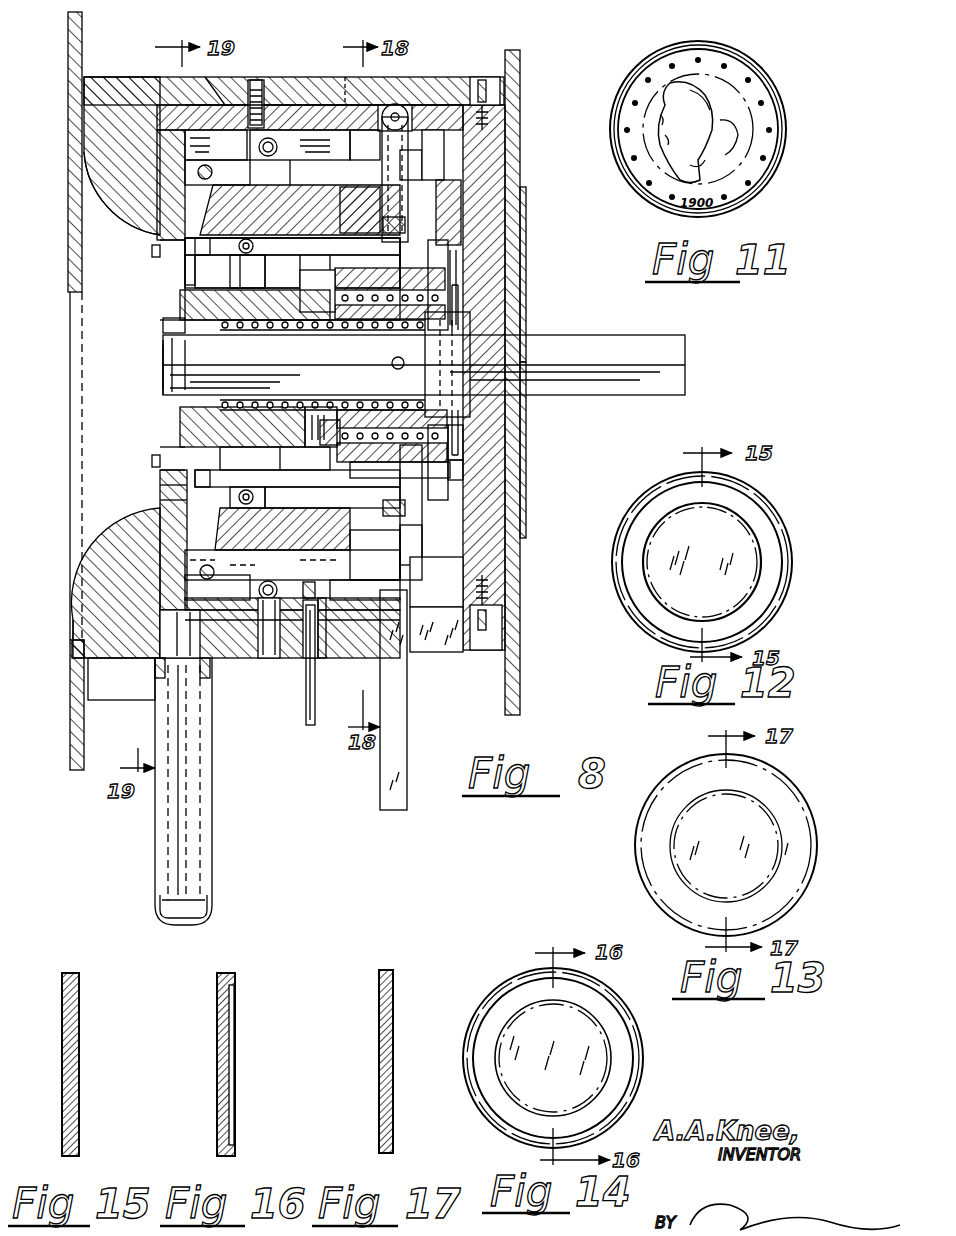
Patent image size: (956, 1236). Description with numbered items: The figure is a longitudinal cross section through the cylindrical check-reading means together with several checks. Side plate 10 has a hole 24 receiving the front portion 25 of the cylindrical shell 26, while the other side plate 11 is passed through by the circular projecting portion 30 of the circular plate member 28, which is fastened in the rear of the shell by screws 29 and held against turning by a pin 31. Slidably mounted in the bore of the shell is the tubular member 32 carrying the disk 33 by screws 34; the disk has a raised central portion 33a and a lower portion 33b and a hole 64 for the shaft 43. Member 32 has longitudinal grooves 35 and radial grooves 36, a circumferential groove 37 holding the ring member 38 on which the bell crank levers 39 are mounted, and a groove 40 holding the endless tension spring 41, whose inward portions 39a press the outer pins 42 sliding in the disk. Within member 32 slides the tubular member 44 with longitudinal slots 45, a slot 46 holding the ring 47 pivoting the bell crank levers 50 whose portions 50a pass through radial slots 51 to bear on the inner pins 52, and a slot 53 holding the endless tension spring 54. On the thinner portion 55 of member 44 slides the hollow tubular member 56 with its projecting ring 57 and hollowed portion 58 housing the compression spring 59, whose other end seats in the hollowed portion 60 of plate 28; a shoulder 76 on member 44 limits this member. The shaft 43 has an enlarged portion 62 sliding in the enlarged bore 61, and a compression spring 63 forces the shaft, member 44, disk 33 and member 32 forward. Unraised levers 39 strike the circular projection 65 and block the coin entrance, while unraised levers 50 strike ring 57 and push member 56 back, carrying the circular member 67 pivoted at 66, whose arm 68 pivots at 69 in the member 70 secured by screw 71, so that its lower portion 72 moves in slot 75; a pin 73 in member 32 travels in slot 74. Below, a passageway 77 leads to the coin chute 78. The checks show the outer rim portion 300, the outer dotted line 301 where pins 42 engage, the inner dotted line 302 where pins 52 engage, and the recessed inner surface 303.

In FIG. 8, the side plate 10 is at (82, 48).
In FIG. 8, the side plate 11 is at (520, 85).
In FIG. 8, the hole 24 is at (72, 650).
In FIG. 8, the front portion 25 is at (70, 600).
In FIG. 8, the cylindrical shell 26 is at (455, 77).
In FIG. 8, the circular plate member 28 is at (500, 590).
In FIG. 8, the screws 29 is at (475, 80).
In FIG. 8, the circular projecting portion 30 is at (528, 528).
In FIG. 8, the pin 31 is at (528, 150).
In FIG. 8, the tubular member 32 is at (345, 214).
In FIG. 8, the disk 33 is at (157, 110).
In FIG. 8, the raised central portion 33a is at (165, 488).
In FIG. 8, the lower portion 33b is at (165, 500).
In FIG. 8, the screws 34 is at (120, 160).
In FIG. 8, the longitudinal grooves 35 is at (385, 140).
In FIG. 8, the radial grooves 36 is at (205, 248).
In FIG. 8, the circumferential groove 37 is at (215, 155).
In FIG. 8, the ring member 38 is at (215, 170).
In FIG. 8, the bell crank levers 39 is at (310, 155).
In FIG. 8, the inwardly radially projecting portion 39a is at (165, 244).
In FIG. 8, the circumferential groove 40 is at (272, 140).
In FIG. 8, the endless tension spring 41 is at (290, 160).
In FIG. 8, the pins 42 is at (160, 265).
In FIG. 8, the shaft 43 is at (165, 350).
In FIG. 8, the tubular member 44 is at (330, 248).
In FIG. 8, the longitudinal slots 45 is at (315, 285).
In FIG. 8, the circumferential slot 46 is at (182, 300).
In FIG. 8, the ring 47 is at (205, 278).
In FIG. 8, the bell crank levers 50 is at (258, 270).
In FIG. 8, the portion of bell crank lever 50a is at (165, 320).
In FIG. 8, the radial slots 51 is at (165, 325).
In FIG. 8, the pins 52 is at (160, 292).
In FIG. 8, the circumferential slot 53 is at (245, 194).
In FIG. 8, the endless tension spring 54 is at (250, 278).
In FIG. 8, the thinner portion 55 is at (322, 445).
In FIG. 8, the hollow tubular member 56 is at (350, 468).
In FIG. 8, the projecting ring 57 is at (440, 265).
In FIG. 8, the circular hollowed out portion 58 is at (470, 472).
In FIG. 8, the compression spring 59 is at (480, 290).
In FIG. 8, the hollowed out portion 60 is at (485, 470).
In FIG. 8, the enlarged bore 61 is at (258, 330).
In FIG. 8, the enlarged portion 62 is at (480, 305).
In FIG. 8, the compression spring 63 is at (305, 330).
In FIG. 8, the hole 64 is at (163, 375).
In FIG. 8, the circular projection 65 is at (435, 185).
In FIG. 8, the pivot 66 is at (408, 355).
In FIG. 8, the circular member 67 is at (390, 218).
In FIG. 8, the upwardly projecting arm 68 is at (345, 78).
In FIG. 8, the pivot 69 is at (395, 105).
In FIG. 8, the member 70 is at (215, 82).
In FIG. 8, the screw 71 is at (256, 78).
In FIG. 8, the lower portion 72 is at (407, 745).
In FIG. 8, the pin 73 is at (300, 700).
In FIG. 8, the slot 74 is at (325, 640).
In FIG. 8, the slot 75 is at (435, 630).
In FIG. 8, the shoulder 76 is at (275, 458).
In FIG. 8, the passageway 77 is at (240, 650).
In FIG. 8, the coin chute 78 is at (195, 755).
In FIG. 11, the outer rim portion 300 is at (760, 60).
In FIG. 12, the outer rim portion 300 is at (792, 568).
In FIG. 14, the outer rim portion 300 is at (585, 990).
In FIG. 16, the outer rim portion 300 is at (235, 978).
In FIG. 11, the outer dotted line 301 is at (780, 103).
In FIG. 12, the outer dotted line 301 is at (755, 488).
In FIG. 13, the outer dotted line 301 is at (800, 810).
In FIG. 14, the outer dotted line 301 is at (640, 1035).
In FIG. 11, the inner dotted line 302 is at (752, 122).
In FIG. 12, the inner dotted line 302 is at (745, 532).
In FIG. 13, the inner dotted line 302 is at (775, 822).
In FIG. 14, the inner dotted line 302 is at (610, 1072).
In FIG. 16, the inner surface 303 is at (233, 1048).